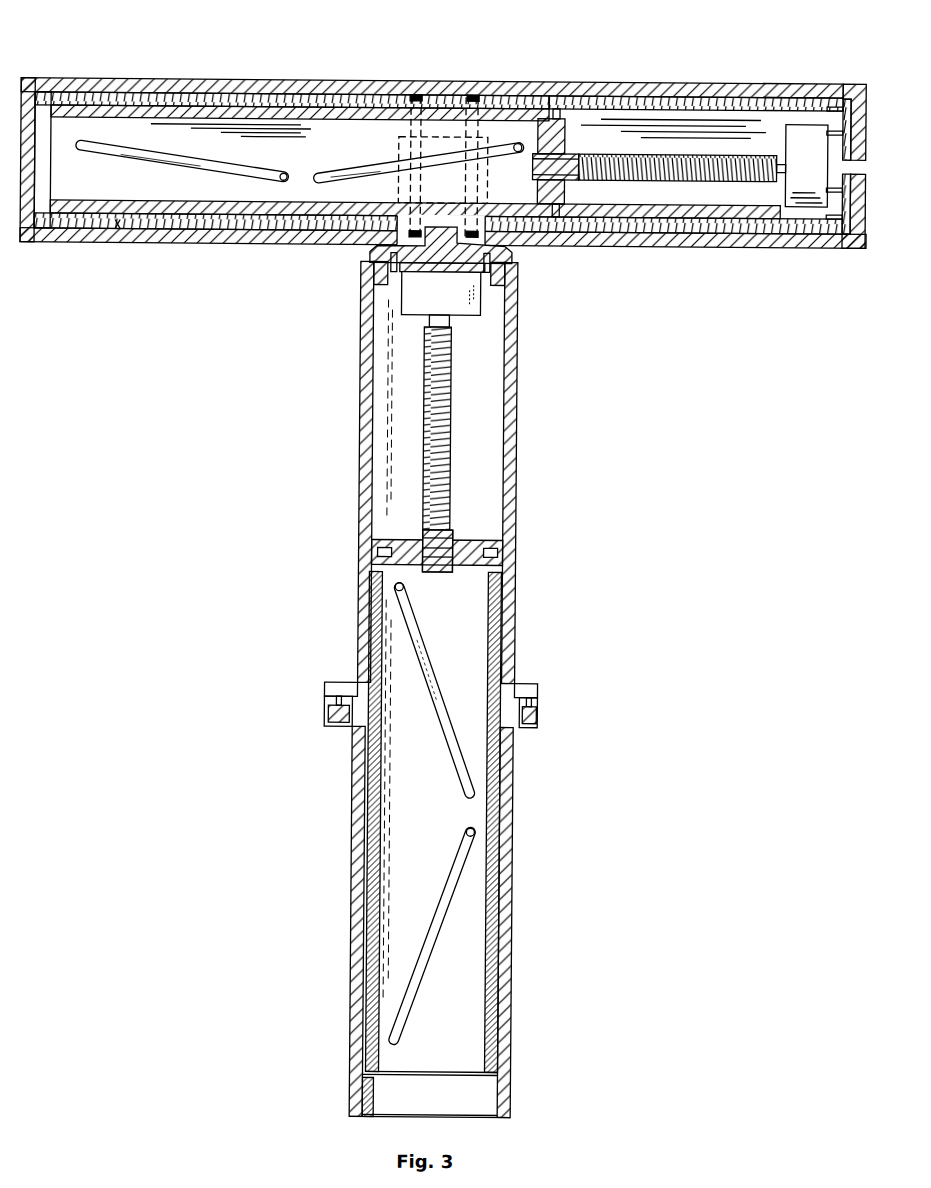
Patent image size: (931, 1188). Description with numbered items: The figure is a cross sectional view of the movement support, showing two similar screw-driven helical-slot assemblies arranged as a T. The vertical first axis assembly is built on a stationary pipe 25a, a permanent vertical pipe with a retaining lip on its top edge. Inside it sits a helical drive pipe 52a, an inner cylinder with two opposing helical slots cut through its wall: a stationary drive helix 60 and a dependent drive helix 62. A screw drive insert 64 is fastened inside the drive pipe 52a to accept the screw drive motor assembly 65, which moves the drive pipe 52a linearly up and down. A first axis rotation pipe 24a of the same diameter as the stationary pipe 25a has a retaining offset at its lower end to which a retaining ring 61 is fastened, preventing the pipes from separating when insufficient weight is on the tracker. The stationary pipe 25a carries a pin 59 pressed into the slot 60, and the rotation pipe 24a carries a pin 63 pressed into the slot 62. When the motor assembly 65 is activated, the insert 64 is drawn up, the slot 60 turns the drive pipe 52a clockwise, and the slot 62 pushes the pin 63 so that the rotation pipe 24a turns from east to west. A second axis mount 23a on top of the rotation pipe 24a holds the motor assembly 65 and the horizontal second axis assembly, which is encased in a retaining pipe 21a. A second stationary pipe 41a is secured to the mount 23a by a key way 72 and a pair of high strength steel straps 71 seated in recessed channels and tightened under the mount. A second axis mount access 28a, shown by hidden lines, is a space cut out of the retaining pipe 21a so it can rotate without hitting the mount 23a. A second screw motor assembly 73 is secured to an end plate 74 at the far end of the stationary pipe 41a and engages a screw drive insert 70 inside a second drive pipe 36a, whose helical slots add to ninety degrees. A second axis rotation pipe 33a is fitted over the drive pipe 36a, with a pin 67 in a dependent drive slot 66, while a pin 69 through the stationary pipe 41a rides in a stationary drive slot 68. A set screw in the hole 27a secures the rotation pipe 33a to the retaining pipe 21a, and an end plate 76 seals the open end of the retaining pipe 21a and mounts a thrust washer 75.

The retaining pipe 21a is at (94, 82).
The 2nd axis rotation pipe 33a is at (194, 102).
The 2nd drive pipe 36a is at (121, 117).
The 2nd stationary pipe 41a is at (671, 98).
The hole 27a is at (118, 230).
The dependent drive slot 66 is at (175, 164).
The pin 67 is at (282, 182).
The stationary drive slot 68 is at (344, 173).
The pin 69 is at (517, 143).
The high strength steel straps 71 is at (413, 96).
The 2nd axis mount access 28a is at (444, 137).
The key way 72 is at (447, 226).
The screw drive insert 70 is at (564, 139).
The 2nd screw motor assembly 73 is at (794, 169).
The end plate 74 is at (842, 212).
The thrust washer 75 is at (844, 147).
The end plate 76 is at (857, 81).
The 2nd axis mount 23a is at (525, 257).
The screw drive motor assembly 65 is at (458, 318).
The 1st axis rotation pipe 24a is at (514, 411).
The screw drive insert 64 is at (472, 545).
The pin 63 is at (398, 586).
The dependent drive helix 62 is at (428, 655).
The retaining ring 61 is at (544, 716).
The pin 59 is at (483, 831).
The stationary drive helix 60 is at (430, 940).
The stationary pipe 25a is at (515, 861).
The helical drive pipe 52a is at (501, 992).